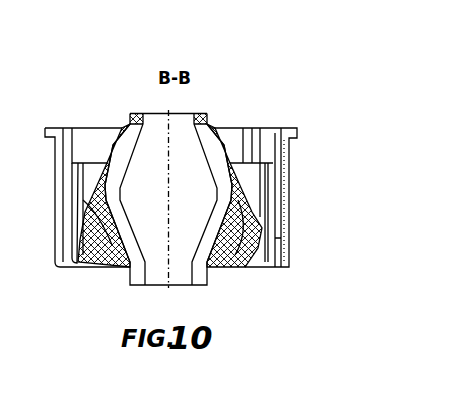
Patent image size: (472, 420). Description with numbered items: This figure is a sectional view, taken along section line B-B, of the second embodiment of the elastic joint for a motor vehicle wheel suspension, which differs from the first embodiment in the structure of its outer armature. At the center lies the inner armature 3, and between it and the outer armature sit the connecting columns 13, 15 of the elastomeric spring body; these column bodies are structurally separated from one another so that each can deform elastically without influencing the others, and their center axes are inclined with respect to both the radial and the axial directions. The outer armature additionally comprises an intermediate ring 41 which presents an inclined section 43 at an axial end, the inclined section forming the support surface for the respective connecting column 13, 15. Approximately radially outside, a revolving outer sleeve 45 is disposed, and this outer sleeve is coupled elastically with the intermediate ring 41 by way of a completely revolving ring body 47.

The inner armature 3 is at (155, 112).
The connecting column 13 is at (220, 265).
The connecting column 15 is at (120, 266).
The intermediate ring 41 is at (260, 128).
The inclined section 43 is at (78, 258).
The outer sleeve 45 is at (290, 187).
The ring body 47 is at (71, 128).